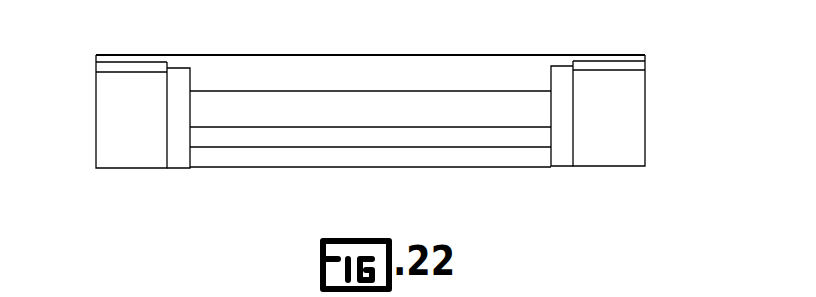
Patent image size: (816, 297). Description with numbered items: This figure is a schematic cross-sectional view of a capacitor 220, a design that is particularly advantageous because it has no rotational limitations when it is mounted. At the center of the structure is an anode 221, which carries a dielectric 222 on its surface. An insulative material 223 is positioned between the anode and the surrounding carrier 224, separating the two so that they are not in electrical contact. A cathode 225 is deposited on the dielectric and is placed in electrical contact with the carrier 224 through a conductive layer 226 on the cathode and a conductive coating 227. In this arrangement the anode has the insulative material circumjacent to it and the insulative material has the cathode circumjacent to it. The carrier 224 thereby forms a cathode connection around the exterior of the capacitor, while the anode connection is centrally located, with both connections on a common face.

The capacitor 220 is at (140, 200).
The anode 221 is at (445, 160).
The dielectric 222 is at (338, 138).
The insulative material 223 is at (177, 158).
The carrier 224 is at (122, 135).
The cathode 225 is at (448, 103).
The conductive layer 226 is at (298, 57).
The conductive coating 227 is at (123, 68).